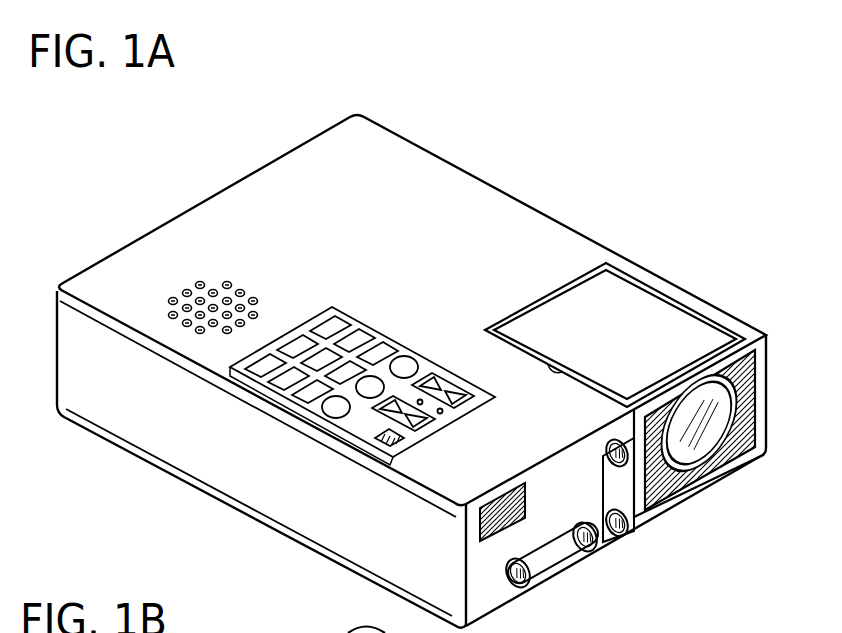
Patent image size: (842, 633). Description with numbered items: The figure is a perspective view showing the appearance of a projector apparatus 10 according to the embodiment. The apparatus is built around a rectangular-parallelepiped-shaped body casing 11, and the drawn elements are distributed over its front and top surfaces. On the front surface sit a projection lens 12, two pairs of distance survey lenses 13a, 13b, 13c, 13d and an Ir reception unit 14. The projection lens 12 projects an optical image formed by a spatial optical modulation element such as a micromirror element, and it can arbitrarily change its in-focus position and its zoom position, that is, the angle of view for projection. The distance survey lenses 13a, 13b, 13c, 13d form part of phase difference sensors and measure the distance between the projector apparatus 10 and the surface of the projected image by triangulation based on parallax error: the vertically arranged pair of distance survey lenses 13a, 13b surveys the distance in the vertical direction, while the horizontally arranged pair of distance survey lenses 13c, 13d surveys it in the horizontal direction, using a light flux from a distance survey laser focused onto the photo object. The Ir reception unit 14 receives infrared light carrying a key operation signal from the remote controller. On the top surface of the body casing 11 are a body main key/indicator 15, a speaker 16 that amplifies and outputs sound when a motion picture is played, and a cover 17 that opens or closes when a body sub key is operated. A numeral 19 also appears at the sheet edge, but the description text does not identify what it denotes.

In FIG. 1A, the projector apparatus 10 is at (601, 206).
In FIG. 1A, the body casing 11 is at (430, 150).
In FIG. 1A, the projection lens 12 is at (690, 457).
In FIG. 1A, the distance survey lens 13a is at (627, 541).
In FIG. 1A, the distance survey lens 13b is at (604, 460).
In FIG. 1A, the distance survey lens 13c is at (590, 553).
In FIG. 1A, the distance survey lens 13d is at (523, 590).
In FIG. 1A, the Ir reception unit 14 is at (480, 527).
In FIG. 1A, the body main key/indicator 15 is at (362, 319).
In FIG. 1A, the speaker 16 is at (228, 280).
In FIG. 1A, the cover 17 is at (670, 322).
In FIG. 1B, the remote controller 19 is at (335, 625).